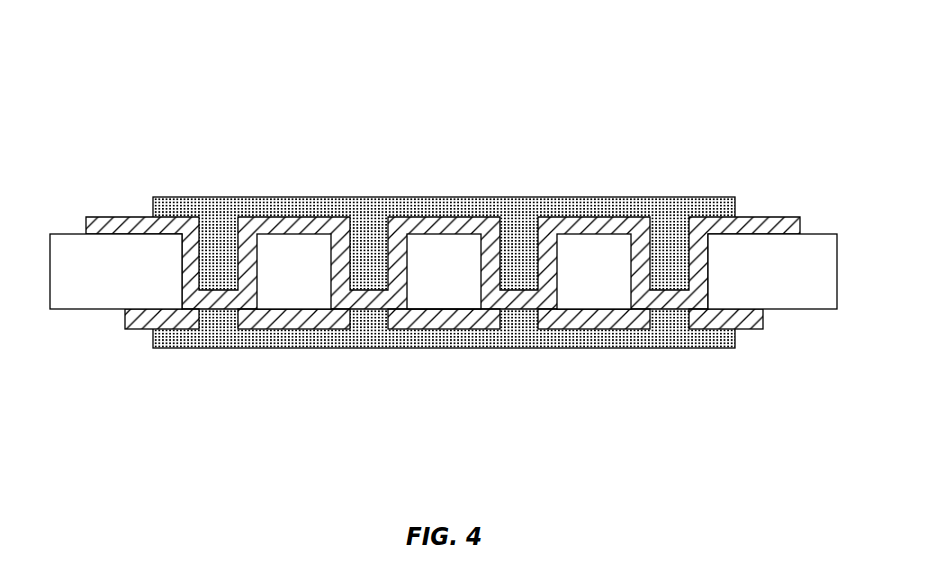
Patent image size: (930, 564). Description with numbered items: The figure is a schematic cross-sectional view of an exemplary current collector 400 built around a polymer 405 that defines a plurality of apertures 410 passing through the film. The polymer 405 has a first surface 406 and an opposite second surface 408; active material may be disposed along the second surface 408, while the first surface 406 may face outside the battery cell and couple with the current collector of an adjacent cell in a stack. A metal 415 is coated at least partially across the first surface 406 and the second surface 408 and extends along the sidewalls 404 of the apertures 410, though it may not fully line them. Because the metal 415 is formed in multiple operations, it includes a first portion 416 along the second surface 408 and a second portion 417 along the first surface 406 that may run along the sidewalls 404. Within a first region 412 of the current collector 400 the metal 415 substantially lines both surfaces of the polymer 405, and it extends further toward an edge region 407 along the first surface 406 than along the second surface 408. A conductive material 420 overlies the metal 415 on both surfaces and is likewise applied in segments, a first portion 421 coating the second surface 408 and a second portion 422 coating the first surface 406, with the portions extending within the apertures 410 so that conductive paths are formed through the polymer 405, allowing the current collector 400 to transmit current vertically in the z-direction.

The current collector 400 is at (108, 86).
The sidewalls 404 is at (708, 246).
The polymer 405 is at (810, 311).
The first surface 406 is at (822, 234).
The edge region 407 is at (70, 311).
The second surface 408 is at (823, 310).
The apertures 410 is at (526, 216).
The first region 412 is at (464, 197).
The metal 415 is at (99, 217).
The first portion of metal 416 is at (143, 330).
The second portion of metal 417 is at (115, 217).
The conductive material 420 is at (255, 197).
The first portion of conductive material 421 is at (227, 349).
The second portion of conductive material 422 is at (352, 197).